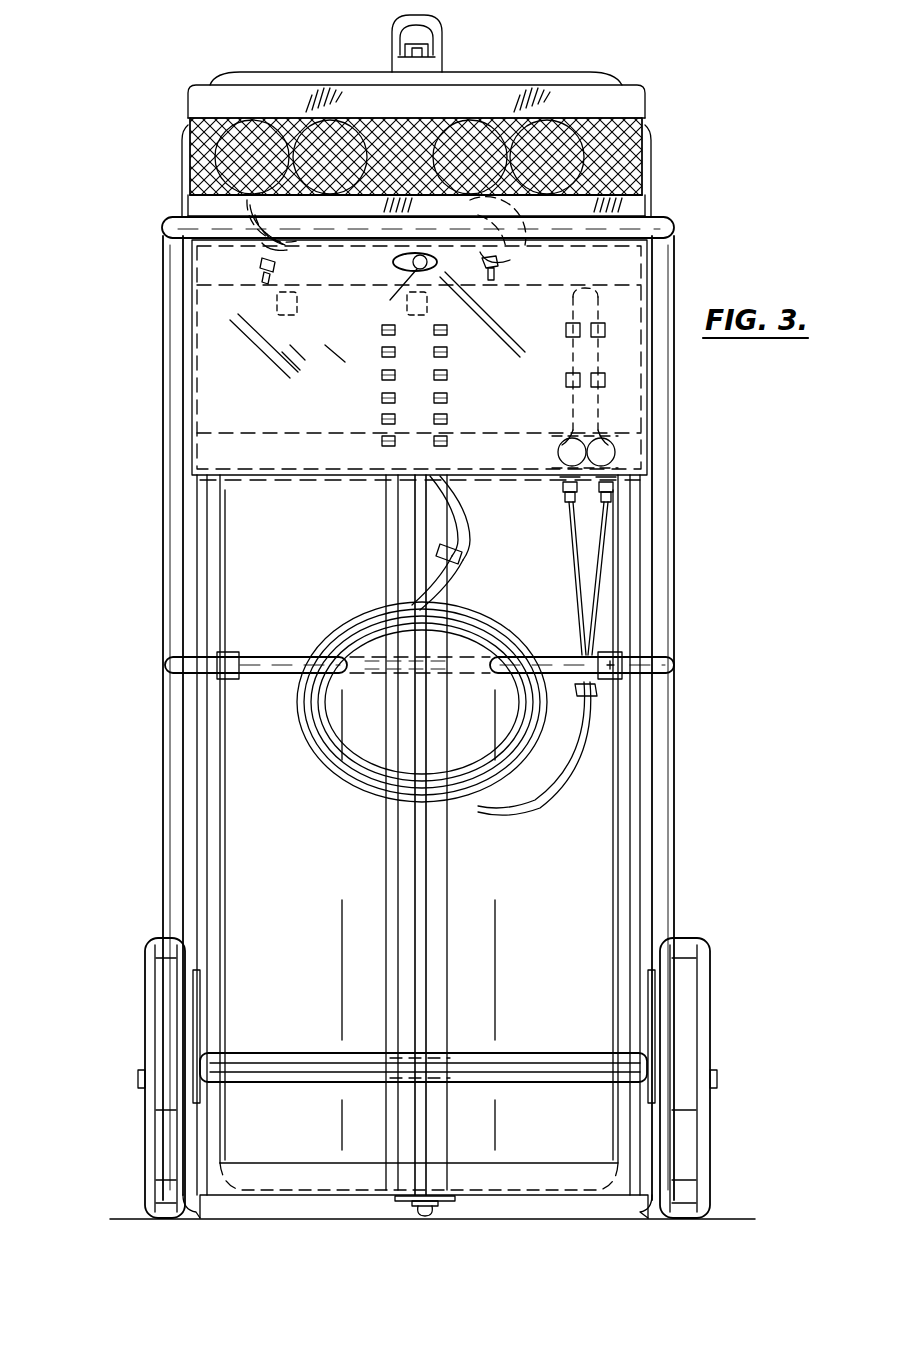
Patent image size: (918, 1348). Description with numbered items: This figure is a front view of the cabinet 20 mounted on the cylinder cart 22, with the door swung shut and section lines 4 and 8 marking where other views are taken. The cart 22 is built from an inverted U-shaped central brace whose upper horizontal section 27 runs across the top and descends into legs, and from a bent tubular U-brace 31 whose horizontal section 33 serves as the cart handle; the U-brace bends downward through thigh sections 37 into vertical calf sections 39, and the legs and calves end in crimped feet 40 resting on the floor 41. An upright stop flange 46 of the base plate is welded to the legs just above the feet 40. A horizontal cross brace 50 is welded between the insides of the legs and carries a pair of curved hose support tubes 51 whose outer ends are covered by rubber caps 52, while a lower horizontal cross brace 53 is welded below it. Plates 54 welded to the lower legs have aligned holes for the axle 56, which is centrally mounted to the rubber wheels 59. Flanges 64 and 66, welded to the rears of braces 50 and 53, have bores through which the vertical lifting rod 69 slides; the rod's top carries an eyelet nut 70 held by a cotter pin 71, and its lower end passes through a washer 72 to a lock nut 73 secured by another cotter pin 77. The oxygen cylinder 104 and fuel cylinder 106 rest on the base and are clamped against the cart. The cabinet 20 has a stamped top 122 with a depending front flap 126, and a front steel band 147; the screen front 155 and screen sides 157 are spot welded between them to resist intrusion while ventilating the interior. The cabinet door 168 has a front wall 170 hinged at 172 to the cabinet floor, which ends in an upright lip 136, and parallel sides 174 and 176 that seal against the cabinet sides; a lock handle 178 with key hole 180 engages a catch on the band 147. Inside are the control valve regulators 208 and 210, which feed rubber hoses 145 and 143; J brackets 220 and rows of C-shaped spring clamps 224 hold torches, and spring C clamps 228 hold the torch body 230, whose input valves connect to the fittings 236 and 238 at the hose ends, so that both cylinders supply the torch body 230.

The cabinet 20 is at (186, 96).
The cylinder cart 22 is at (145, 780).
The upper horizontal section 27 is at (257, 77).
The bent tubular U-brace 31 is at (682, 822).
The horizontal section 33 is at (560, 228).
The thigh sections 37 is at (164, 488).
The vertical calf section 39 is at (165, 832).
The crimped feet 40 is at (196, 1212).
The floor 41 is at (148, 1216).
The upright stop flange 46 is at (278, 1166).
The horizontal cross brace 50 is at (370, 640).
The curved hose support tubes 51 is at (550, 655).
The rubber caps 52 is at (230, 652).
The lower horizontal cross brace 53 is at (528, 1053).
The plates 54 is at (200, 1018).
The axle 56 is at (508, 1082).
The rubber wheels 59 is at (160, 995).
The horizontal flange 64 is at (450, 655).
The horizontal flange 66 is at (448, 1056).
The vertical lifting rod 69 is at (428, 918).
The eyelet nut 70 is at (436, 28).
The cotter pin 71 is at (416, 44).
The washer 72 is at (395, 1205).
The lock nut 73 is at (418, 1208).
The cotter pin 77 is at (432, 1210).
The oxygen cylinder 104 is at (537, 871).
The fuel cylinder 106 is at (309, 832).
The top 122 is at (528, 82).
The front flap 126 is at (648, 112).
The upright lip 136 is at (265, 417).
The rubber hose 143 is at (448, 512).
The rubber hose 145 is at (466, 553).
The front steel band 147 is at (640, 203).
The screen front 155 is at (196, 186).
The screen sides 157 is at (192, 148).
The cabinet door 168 is at (215, 403).
The front wall 170 is at (270, 478).
The hinge 172 is at (305, 478).
The door side 174 is at (190, 360).
The door side 176 is at (648, 408).
The lock handle 178 is at (392, 262).
The key hole 180 is at (382, 289).
The control valve regulator 208 is at (240, 238).
The control valve regulator 210 is at (515, 262).
The J brackets 220 is at (405, 310).
The C-shaped spring clamps 224 is at (382, 350).
The spring C clamps 228 is at (568, 333).
The torch body 230 is at (556, 405).
The fitting 236 is at (598, 520).
The fitting 238 is at (562, 492).
The section line 4 is at (415, 40).
The section line 8 is at (125, 655).